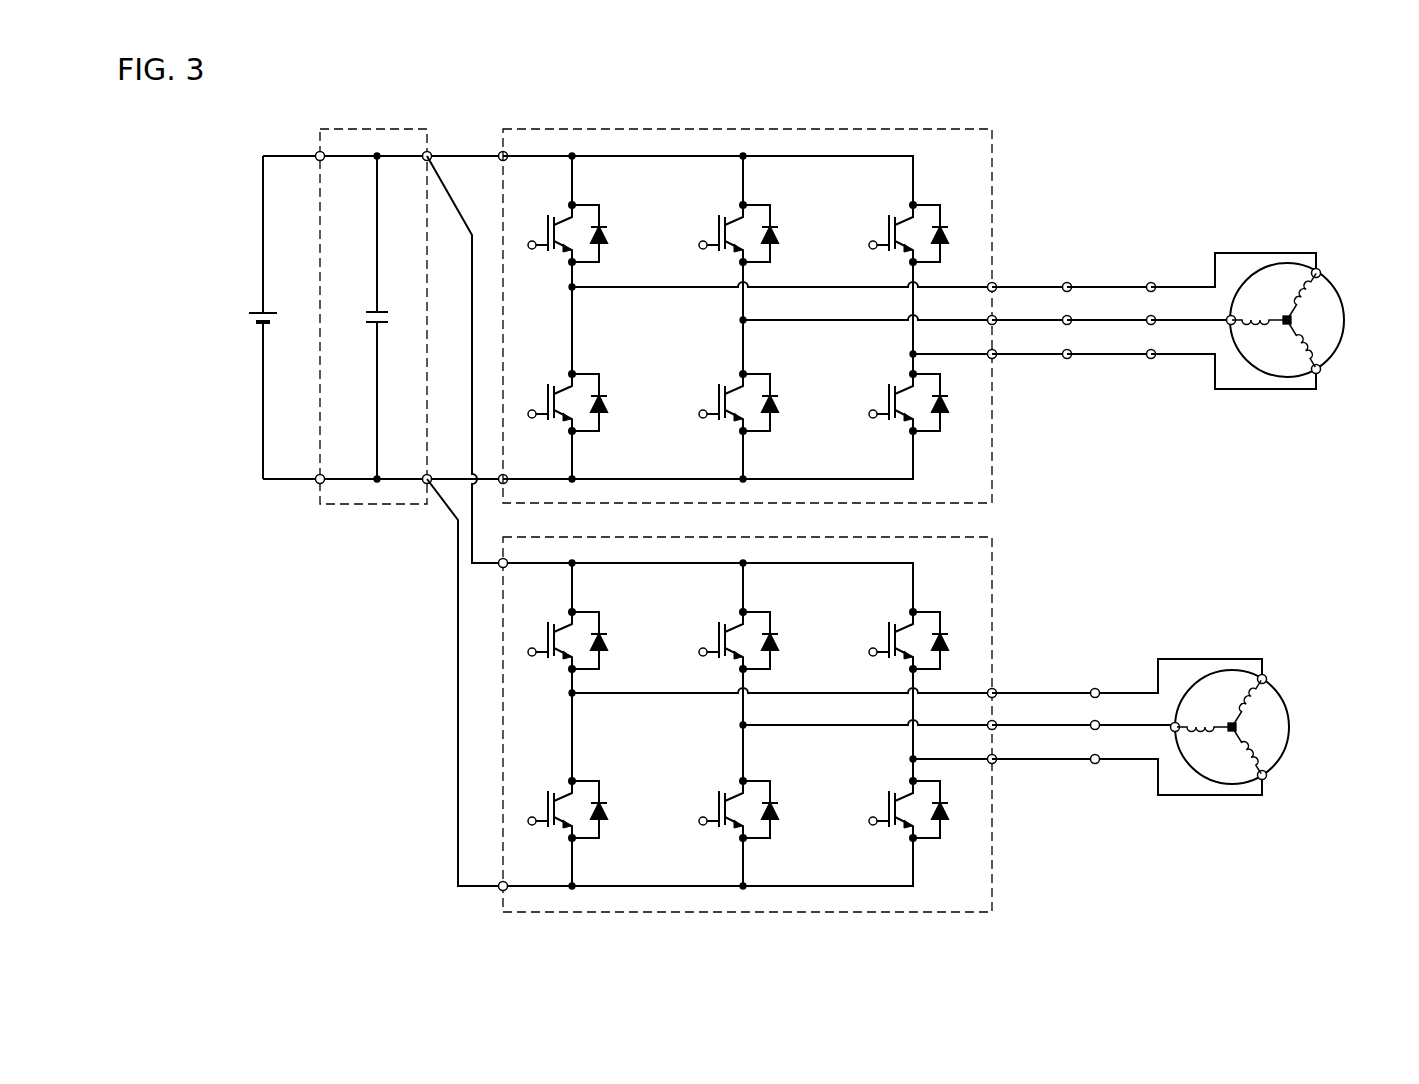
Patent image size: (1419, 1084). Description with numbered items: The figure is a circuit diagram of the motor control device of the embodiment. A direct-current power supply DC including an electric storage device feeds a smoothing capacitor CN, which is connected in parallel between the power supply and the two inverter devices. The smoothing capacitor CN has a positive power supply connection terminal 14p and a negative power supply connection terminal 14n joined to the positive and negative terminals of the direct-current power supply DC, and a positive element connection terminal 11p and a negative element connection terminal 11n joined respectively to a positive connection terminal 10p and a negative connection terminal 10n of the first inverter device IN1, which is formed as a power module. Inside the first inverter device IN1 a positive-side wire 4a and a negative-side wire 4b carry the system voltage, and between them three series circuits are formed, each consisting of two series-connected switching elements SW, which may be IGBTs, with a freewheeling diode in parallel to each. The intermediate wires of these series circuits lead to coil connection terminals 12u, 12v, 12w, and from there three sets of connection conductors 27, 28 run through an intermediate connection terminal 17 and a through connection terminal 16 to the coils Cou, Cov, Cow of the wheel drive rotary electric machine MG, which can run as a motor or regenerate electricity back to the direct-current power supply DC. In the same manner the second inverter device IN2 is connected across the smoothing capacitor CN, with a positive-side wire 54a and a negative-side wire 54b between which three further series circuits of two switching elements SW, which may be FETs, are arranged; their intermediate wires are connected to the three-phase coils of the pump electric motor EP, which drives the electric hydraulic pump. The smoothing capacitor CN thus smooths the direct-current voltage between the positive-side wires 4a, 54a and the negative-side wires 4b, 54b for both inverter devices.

The direct-current power supply DC is at (250, 312).
The smoothing capacitor CN is at (365, 129).
The positive power supply connection terminal 14p is at (318, 150).
The negative power supply connection terminal 14n is at (318, 487).
The positive element connection terminal 11p is at (430, 151).
The negative element connection terminal 11n is at (425, 487).
The positive connection terminal 10p is at (505, 151).
The negative connection terminal 10n is at (500, 487).
The first inverter device IN1 is at (838, 128).
The second inverter device IN2 is at (995, 880).
The positive-side wire 4a is at (690, 155).
The negative-side wire 4b is at (657, 477).
The positive-side wire 54a is at (713, 560).
The negative-side wire 54b is at (650, 884).
The switching element SW is at (906, 794).
The coil connection terminal 12u is at (996, 282).
The coil connection terminal 12v is at (988, 325).
The coil connection terminal 12w is at (995, 359).
The connection conductor 27 is at (1033, 352).
The intermediate connection terminal 17 is at (1070, 350).
The connection conductor 28 is at (1117, 356).
The through connection terminal 16 is at (1154, 350).
The wheel drive rotary electric machine MG is at (1317, 347).
The U-phase coil Cou is at (1317, 292).
The V-phase coil Cov is at (1265, 346).
The W-phase coil Cow is at (1308, 348).
The pump electric motor EP is at (1290, 727).